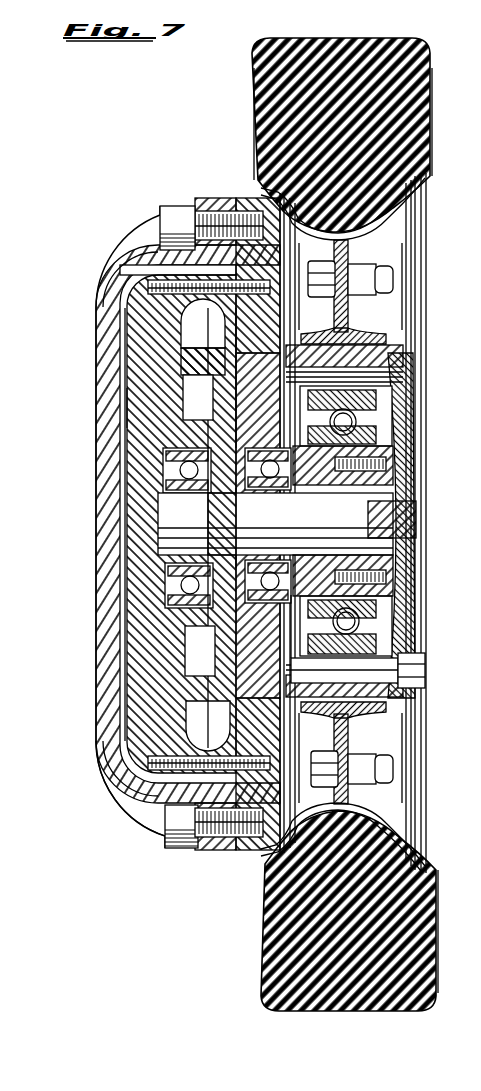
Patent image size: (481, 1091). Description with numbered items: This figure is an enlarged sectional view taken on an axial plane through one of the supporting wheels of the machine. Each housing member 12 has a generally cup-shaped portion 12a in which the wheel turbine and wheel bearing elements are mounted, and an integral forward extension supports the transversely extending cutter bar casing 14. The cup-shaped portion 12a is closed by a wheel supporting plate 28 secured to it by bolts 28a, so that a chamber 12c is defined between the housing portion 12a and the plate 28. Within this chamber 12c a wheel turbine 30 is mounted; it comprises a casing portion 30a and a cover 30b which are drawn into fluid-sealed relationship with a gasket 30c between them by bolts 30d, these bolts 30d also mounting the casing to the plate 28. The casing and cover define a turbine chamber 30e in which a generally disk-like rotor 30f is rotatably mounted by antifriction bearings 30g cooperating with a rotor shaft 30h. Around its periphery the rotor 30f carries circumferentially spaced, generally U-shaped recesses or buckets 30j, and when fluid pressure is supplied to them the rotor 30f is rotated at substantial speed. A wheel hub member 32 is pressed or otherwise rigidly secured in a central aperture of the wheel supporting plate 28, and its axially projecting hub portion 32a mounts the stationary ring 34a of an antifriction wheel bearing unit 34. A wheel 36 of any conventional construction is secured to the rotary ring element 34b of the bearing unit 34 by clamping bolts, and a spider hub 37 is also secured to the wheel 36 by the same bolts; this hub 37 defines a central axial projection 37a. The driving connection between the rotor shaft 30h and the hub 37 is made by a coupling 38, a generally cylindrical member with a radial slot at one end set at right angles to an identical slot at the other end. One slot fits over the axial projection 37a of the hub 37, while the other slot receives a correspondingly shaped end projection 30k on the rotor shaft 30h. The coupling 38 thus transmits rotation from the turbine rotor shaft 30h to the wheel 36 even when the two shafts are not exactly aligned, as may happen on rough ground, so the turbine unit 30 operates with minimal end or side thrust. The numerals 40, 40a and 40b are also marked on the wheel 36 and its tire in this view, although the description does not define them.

The housing member 12 is at (98, 571).
The cup-shaped portion 12a is at (127, 783).
The chamber 12c is at (160, 260).
The cutter bar casing 14 is at (362, 524).
The wheel supporting plate 28 is at (250, 195).
The bolts 28a is at (165, 207).
The wheel turbine 30 is at (140, 322).
The casing portion 30a is at (137, 402).
The cover 30b is at (147, 383).
The gasket 30c is at (100, 292).
The bolts 30d is at (160, 277).
The turbine chamber 30e is at (193, 307).
The rotor 30f is at (193, 330).
The antifriction bearings 30g is at (157, 462).
The rotor shaft 30h is at (180, 510).
The buckets 30j is at (192, 702).
The end projection 30k is at (285, 500).
The wheel hub member 32 is at (303, 370).
The hub portion 32a is at (405, 403).
The wheel bearing unit 34 is at (390, 623).
The stationary ring 34a is at (393, 593).
The rotary ring element 34b is at (340, 624).
The wheel 36 is at (420, 818).
The spider hub 37 is at (353, 443).
The axial projection 37a is at (398, 463).
The coupling 38 is at (343, 517).
The tire sidewall 40 is at (452, 151).
The tire sidewall 40a is at (455, 648).
The tire bead 40b is at (363, 127).